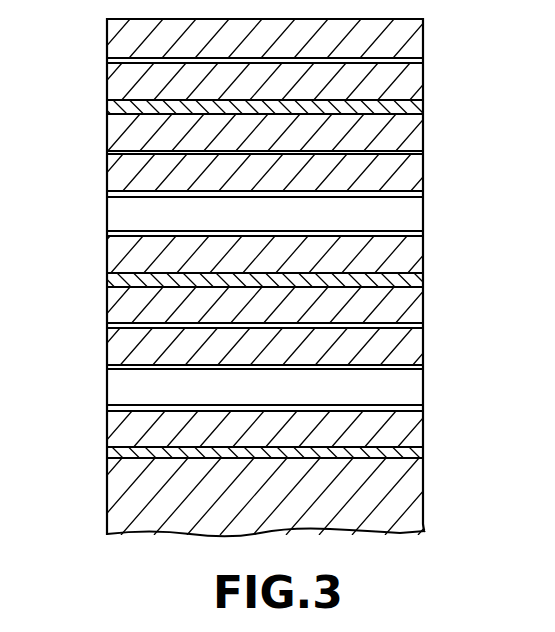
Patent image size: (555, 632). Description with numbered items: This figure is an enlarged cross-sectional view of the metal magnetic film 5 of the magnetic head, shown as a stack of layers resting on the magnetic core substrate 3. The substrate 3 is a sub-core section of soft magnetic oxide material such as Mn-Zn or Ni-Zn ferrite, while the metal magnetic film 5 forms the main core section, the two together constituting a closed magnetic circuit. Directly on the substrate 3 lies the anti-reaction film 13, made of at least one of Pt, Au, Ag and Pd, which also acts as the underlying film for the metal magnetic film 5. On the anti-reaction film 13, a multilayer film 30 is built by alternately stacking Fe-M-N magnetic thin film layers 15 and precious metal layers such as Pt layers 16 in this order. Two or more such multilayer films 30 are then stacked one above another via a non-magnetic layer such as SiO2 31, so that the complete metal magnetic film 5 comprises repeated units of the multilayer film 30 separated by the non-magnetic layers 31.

The magnetic core substrate 3 is at (413, 497).
The metal magnetic film 5 is at (487, 75).
The anti-reaction film 13 is at (413, 451).
The Fe-M-N magnetic thin film layer 15 is at (413, 127).
The precious metal layer 16 is at (413, 151).
The multilayer film 30 is at (98, 115).
The non-magnetic layer 31 is at (413, 105).